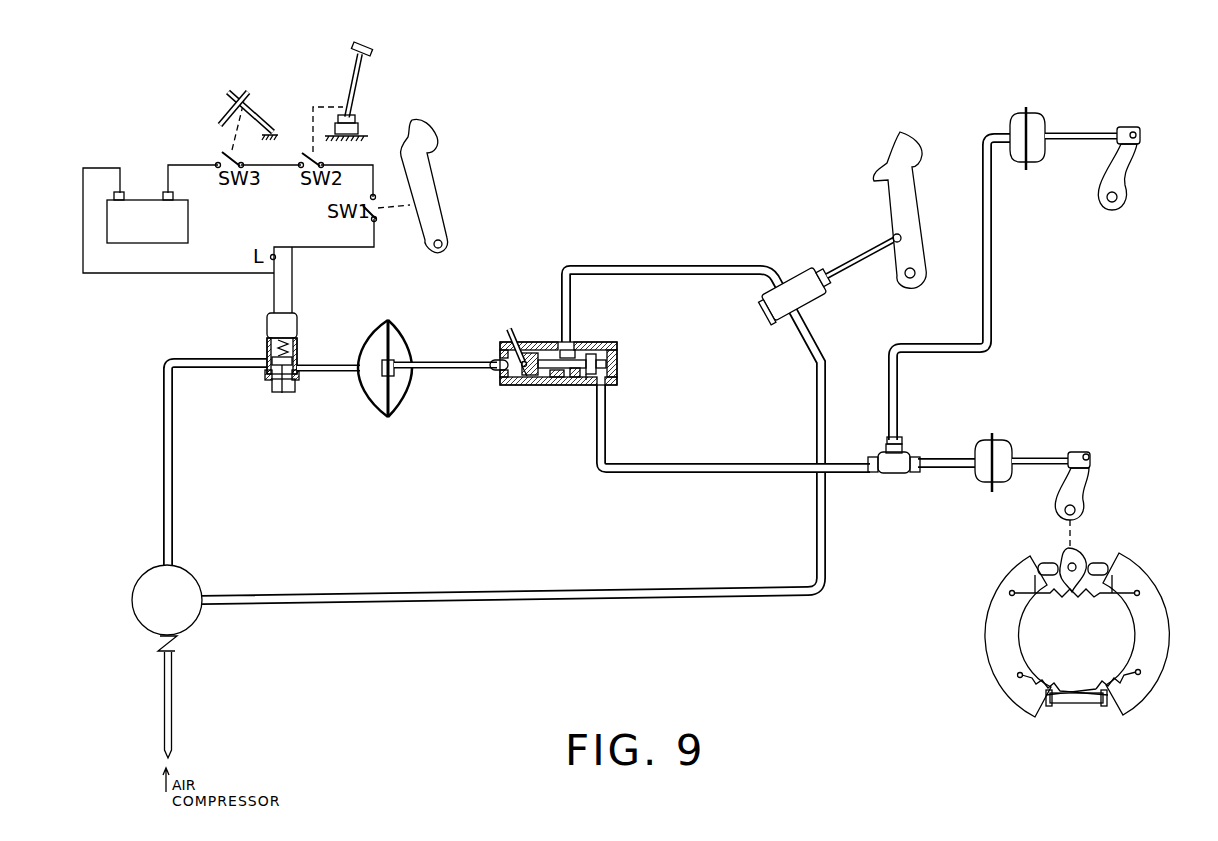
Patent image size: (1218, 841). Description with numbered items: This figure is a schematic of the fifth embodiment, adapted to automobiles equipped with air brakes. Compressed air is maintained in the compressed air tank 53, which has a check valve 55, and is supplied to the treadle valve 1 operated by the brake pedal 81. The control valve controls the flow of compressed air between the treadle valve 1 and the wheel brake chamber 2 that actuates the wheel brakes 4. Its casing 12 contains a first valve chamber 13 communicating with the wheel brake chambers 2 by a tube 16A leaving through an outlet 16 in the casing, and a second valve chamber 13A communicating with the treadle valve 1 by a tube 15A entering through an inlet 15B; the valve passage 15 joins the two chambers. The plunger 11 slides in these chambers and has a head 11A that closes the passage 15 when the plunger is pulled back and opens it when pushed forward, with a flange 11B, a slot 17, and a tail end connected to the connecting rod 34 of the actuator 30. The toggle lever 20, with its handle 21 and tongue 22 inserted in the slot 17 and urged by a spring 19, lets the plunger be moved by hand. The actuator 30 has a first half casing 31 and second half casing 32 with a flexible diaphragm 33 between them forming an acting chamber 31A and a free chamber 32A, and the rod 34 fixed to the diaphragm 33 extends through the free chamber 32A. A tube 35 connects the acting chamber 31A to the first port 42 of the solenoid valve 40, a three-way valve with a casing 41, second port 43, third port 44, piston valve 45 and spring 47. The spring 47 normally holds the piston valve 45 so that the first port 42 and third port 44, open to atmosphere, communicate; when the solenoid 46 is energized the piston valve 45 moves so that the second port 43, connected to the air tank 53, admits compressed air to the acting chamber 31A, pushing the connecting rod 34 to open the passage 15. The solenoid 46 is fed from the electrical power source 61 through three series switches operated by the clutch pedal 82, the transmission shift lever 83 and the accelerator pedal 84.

The treadle valve 1 is at (818, 308).
The wheel brake chamber 2 is at (1022, 165).
The wheel brakes 4 is at (1163, 619).
The plunger 11 is at (552, 375).
The head 11A is at (613, 348).
The flange 11B is at (550, 378).
The casing 12 is at (572, 369).
The first valve chamber 13 is at (617, 356).
The second valve chamber 13A is at (588, 378).
The valve passage 15 is at (574, 378).
The tube 15A is at (660, 266).
The inlet port 15B is at (569, 342).
The outlet port 16 is at (603, 386).
The tube 16A is at (698, 473).
The slot 17 is at (498, 357).
The spring 19 is at (523, 380).
The toggle lever 20 is at (500, 333).
The handle 21 is at (516, 336).
The tongue 22 is at (515, 376).
The actuator 30 is at (394, 386).
The first half casing 31 is at (366, 337).
The acting chamber 31A is at (373, 357).
The second half casing 32 is at (407, 340).
The free chamber 32A is at (406, 392).
The flexible diaphragm 33 is at (383, 400).
The connecting rod 34 is at (446, 371).
The tube 35 is at (332, 373).
The solenoid valve 40 is at (278, 377).
The casing 41 is at (268, 347).
The first port 42 is at (297, 365).
The second port 43 is at (266, 368).
The third port 44 is at (268, 381).
The piston valve 45 is at (297, 383).
The solenoid 46 is at (275, 325).
The spring 47 is at (296, 339).
The compressed air tank 53 is at (199, 578).
The check valve 55 is at (179, 644).
The electrical power source 61 is at (188, 222).
The brake pedal 81 is at (902, 208).
The clutch pedal 82 is at (437, 128).
The transmission shift lever 83 is at (368, 45).
The accelerator pedal 84 is at (244, 101).